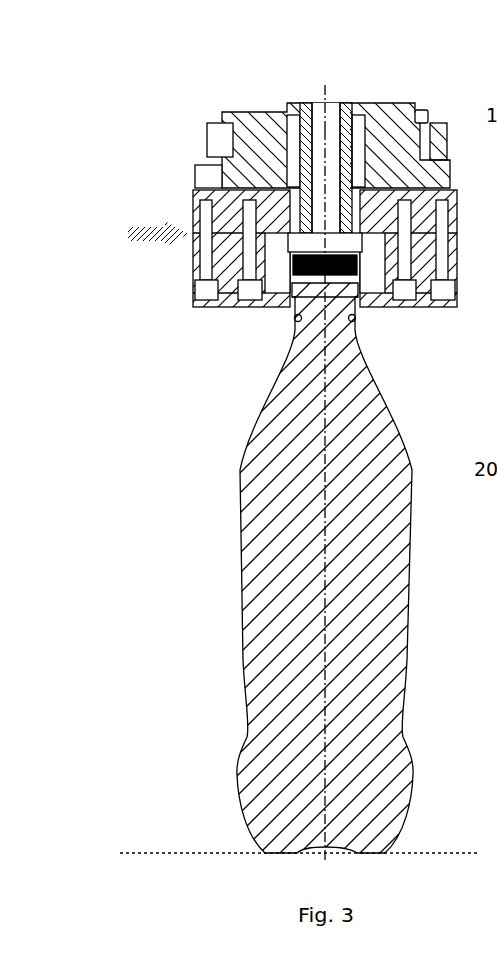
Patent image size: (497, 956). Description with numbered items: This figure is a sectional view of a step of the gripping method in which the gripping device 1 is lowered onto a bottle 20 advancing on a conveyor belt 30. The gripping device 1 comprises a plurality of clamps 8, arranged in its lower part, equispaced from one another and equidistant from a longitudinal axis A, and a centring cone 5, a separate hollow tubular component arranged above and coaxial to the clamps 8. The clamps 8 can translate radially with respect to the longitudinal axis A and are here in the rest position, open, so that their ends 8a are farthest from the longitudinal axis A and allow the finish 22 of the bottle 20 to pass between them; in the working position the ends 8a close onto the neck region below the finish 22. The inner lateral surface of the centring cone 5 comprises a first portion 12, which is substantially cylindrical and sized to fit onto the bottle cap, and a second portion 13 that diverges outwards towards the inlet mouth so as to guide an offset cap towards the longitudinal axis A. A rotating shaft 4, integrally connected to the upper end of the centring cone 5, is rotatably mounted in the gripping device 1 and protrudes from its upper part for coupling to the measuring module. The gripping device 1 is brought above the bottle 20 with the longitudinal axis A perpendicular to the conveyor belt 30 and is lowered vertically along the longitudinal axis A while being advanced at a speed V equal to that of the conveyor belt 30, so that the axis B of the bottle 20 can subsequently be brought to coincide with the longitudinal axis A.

The gripping device 1 is at (284, 188).
The rotating shaft 4 is at (318, 150).
The longitudinal axis A is at (334, 128).
The centring cone 5 is at (292, 250).
The first portion 12 is at (292, 262).
The second portion 13 is at (292, 302).
The finish 22 is at (296, 326).
The clamps 8 is at (423, 298).
The ends 8a is at (356, 314).
The bottle 20 is at (292, 495).
The axis B is at (323, 548).
The conveyor belt 30 is at (199, 853).
The speed V is at (157, 226).